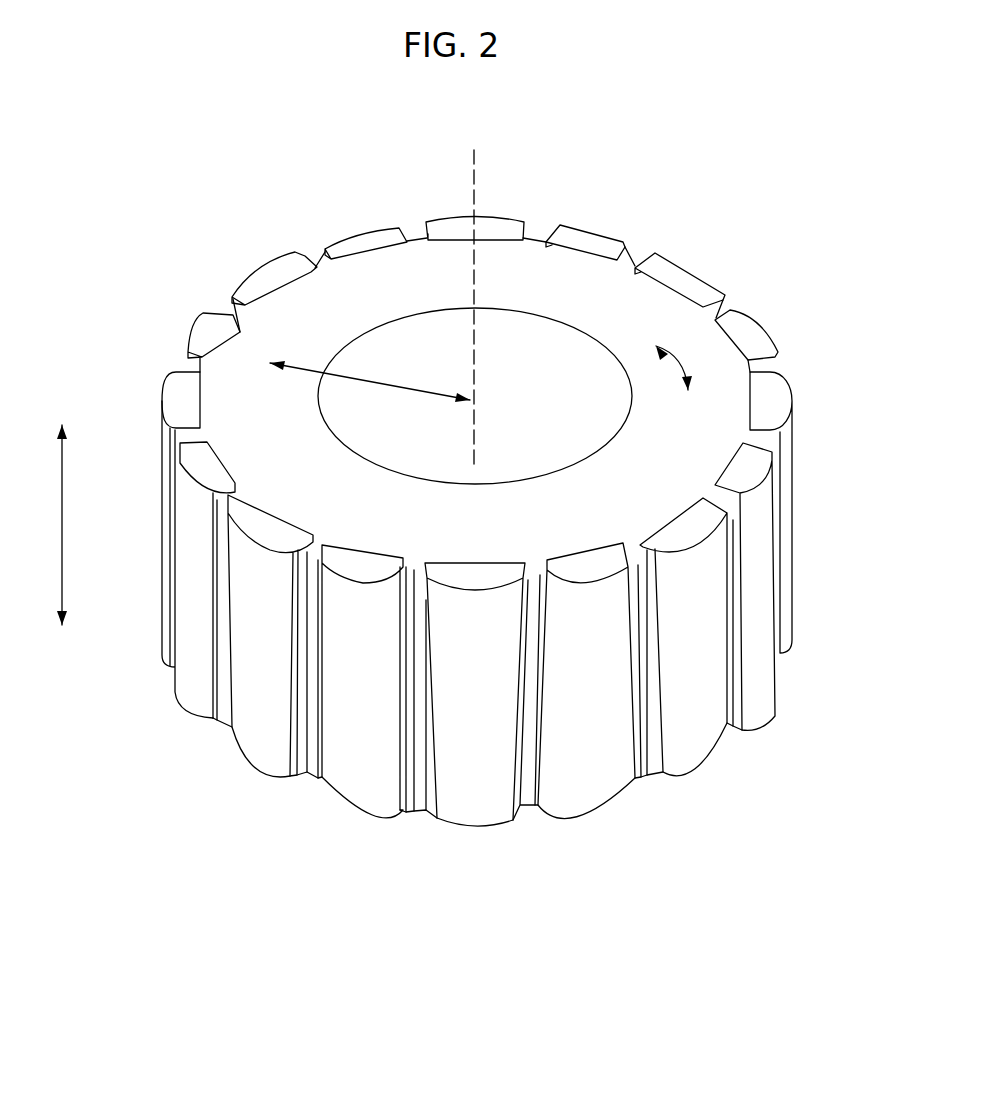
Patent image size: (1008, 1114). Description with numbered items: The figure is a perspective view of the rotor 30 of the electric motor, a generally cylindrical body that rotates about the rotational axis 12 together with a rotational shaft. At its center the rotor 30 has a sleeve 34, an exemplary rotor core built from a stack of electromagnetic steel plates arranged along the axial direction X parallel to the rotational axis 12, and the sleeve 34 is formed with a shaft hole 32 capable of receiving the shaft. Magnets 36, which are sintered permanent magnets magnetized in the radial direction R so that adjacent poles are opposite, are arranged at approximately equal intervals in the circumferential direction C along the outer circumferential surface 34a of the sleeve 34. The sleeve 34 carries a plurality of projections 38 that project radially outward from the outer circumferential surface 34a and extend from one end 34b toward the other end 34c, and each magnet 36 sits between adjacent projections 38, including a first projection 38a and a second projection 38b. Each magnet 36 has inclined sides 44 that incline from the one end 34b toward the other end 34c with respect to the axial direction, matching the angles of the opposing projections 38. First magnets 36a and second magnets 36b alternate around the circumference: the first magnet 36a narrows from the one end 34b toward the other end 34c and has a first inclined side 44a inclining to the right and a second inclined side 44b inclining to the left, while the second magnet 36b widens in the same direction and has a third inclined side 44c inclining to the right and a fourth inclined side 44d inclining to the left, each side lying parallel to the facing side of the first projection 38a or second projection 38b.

The rotational axis 12 is at (478, 200).
The rotor 30 is at (186, 283).
The shaft hole 32 is at (563, 333).
The sleeve 34 is at (740, 367).
The outer circumferential surface 34a is at (722, 437).
The one end 34b is at (152, 378).
The other end 34c is at (134, 667).
The magnet 36 is at (752, 204).
The first magnet 36a is at (688, 268).
The second magnet 36b is at (774, 343).
The projection 38 is at (265, 829).
The first projection 38a is at (310, 777).
The second projection 38b is at (230, 727).
The inclined side 44 is at (565, 484).
The first inclined side 44a is at (306, 557).
The second inclined side 44b is at (232, 495).
The third inclined side 44c is at (540, 575).
The fourth inclined side 44d is at (637, 577).